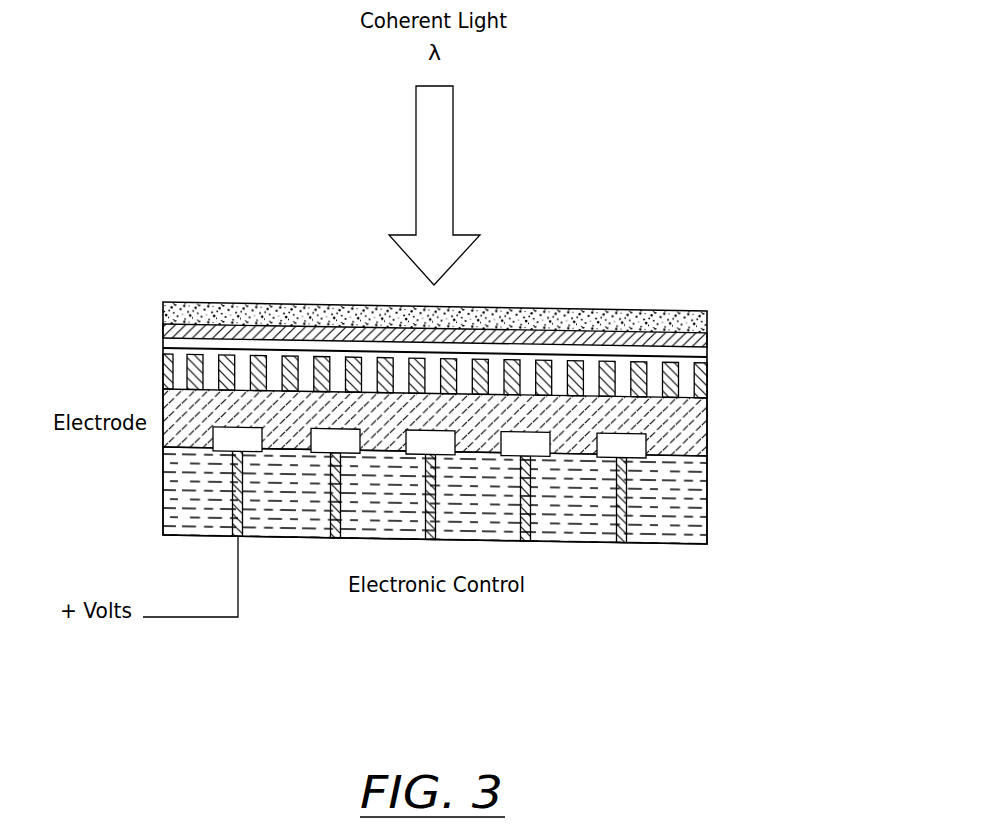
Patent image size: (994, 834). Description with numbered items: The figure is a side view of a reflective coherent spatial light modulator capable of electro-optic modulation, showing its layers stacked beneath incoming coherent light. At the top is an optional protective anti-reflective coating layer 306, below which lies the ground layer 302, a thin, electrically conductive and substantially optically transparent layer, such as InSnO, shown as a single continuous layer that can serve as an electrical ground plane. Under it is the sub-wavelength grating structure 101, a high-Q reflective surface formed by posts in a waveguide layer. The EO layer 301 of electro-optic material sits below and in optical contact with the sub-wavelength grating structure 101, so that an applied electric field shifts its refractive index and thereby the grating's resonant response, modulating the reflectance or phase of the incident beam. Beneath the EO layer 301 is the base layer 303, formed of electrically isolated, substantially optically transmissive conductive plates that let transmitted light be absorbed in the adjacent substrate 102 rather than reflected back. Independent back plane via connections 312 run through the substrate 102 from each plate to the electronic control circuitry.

The protective anti-reflective coating layer 306 is at (607, 309).
The ground layer 302 is at (163, 330).
The sub-wavelength grating structure 101 is at (707, 367).
The EO layer 301 is at (697, 407).
The base layer 303 is at (627, 446).
The substrate 102 is at (687, 505).
The back plane via connections 312 is at (620, 543).